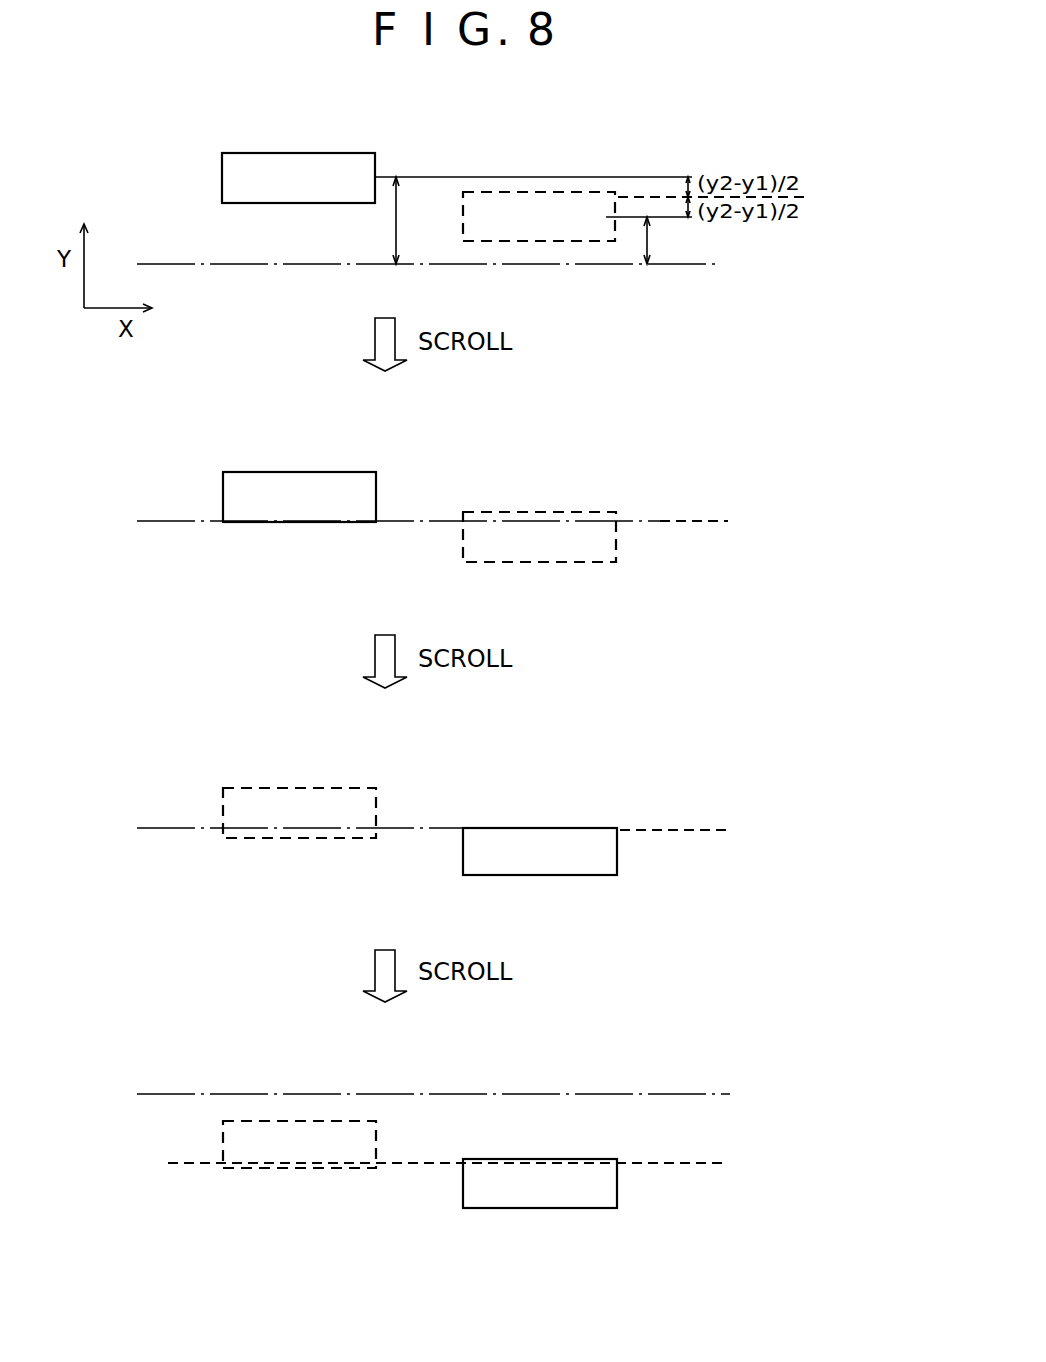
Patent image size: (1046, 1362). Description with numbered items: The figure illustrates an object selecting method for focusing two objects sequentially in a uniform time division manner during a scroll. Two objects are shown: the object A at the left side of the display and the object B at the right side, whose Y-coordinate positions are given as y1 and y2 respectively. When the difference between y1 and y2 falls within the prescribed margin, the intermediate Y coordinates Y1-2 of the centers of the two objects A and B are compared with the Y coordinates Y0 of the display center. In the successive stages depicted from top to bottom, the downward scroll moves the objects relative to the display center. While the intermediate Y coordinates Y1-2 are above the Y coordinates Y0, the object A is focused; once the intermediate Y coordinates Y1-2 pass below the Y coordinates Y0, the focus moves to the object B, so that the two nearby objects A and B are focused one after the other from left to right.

The object A is at (309, 634).
The object B is at (540, 671).
The Y coordinates of the display center Y0 is at (425, 678).
The intermediate Y coordinates Y1-2 is at (520, 681).
The Y-coordinate position information of object A y1 is at (411, 220).
The Y-coordinate position information of object B y2 is at (663, 240).